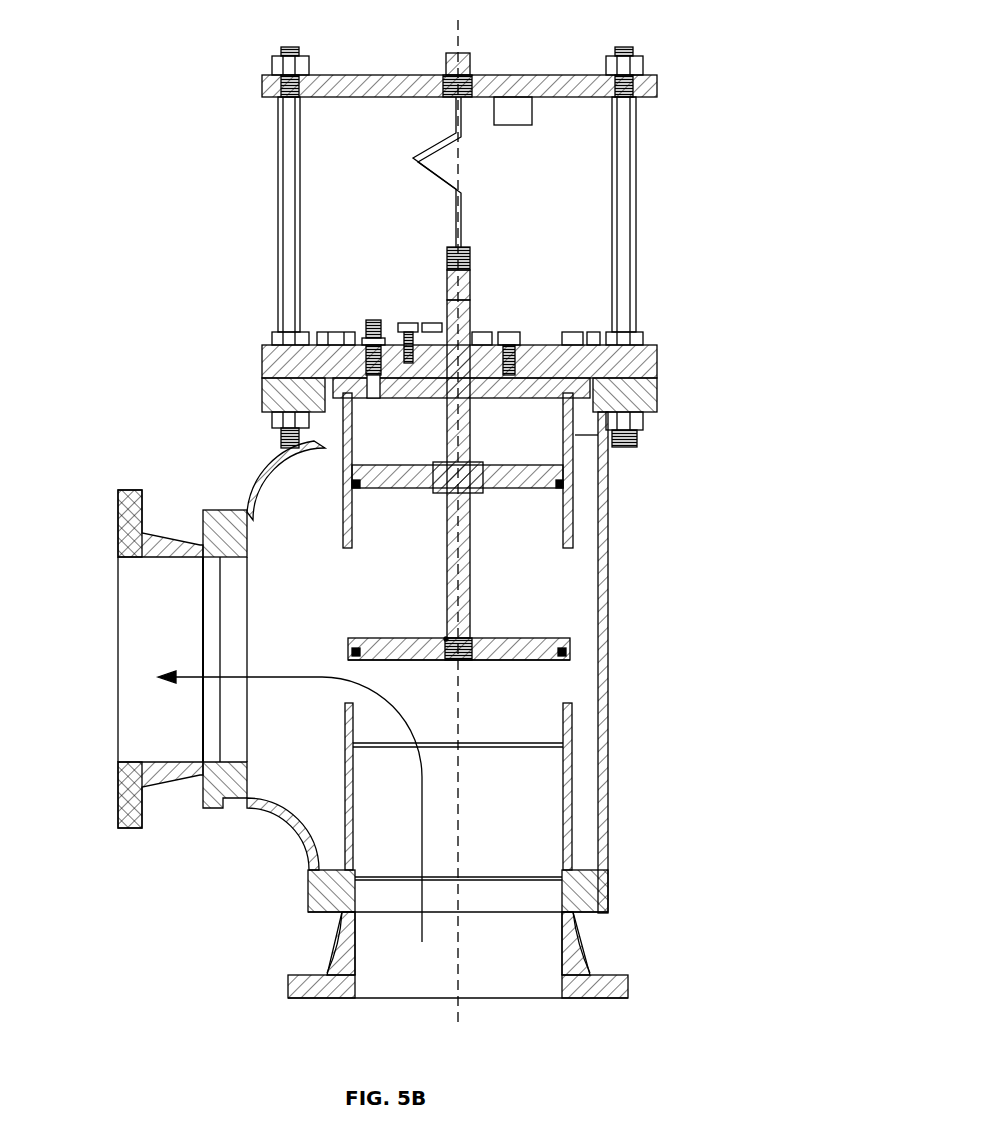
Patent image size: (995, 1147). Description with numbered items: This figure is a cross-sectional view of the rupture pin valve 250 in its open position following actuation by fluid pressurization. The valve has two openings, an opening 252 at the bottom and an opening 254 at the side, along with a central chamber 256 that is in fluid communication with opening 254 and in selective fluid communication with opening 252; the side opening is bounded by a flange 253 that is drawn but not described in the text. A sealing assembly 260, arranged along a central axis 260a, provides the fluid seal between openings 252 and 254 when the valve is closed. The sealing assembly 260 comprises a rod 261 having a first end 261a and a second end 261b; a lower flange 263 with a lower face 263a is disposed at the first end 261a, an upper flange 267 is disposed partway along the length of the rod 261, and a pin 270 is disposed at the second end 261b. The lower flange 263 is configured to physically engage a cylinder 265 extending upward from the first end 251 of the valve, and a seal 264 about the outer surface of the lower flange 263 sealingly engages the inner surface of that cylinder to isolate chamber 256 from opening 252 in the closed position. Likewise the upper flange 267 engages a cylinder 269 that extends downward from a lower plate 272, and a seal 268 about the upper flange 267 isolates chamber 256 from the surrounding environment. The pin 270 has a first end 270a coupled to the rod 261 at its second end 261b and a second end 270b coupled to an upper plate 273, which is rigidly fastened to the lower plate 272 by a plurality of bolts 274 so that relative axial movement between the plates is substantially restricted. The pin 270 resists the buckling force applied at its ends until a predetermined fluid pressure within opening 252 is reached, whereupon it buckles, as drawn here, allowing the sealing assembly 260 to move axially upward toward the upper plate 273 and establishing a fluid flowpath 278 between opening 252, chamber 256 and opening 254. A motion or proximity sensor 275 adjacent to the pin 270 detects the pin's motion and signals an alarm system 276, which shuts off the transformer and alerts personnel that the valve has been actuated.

The rupture pin valve 250 is at (126, 36).
The first end 251 is at (597, 993).
The opening 252 is at (415, 990).
The inlet flange 253 is at (123, 528).
The opening 254 is at (128, 728).
The central chamber 256 is at (303, 830).
The sealing assembly 260 is at (461, 508).
The central axis 260a is at (460, 1008).
The rod 261 is at (460, 413).
The first end 261a is at (445, 638).
The second end 261b is at (470, 253).
The lower flange 263 is at (492, 650).
The lower face 263a is at (528, 660).
The seal 264 is at (352, 653).
The cylinder 265 is at (568, 768).
The upper flange 267 is at (535, 480).
The seal 268 is at (352, 482).
The cylinder 269 is at (570, 443).
The pin 270 is at (455, 127).
The first end 270a is at (448, 257).
The second end 270b is at (443, 77).
The lower plate 272 is at (317, 363).
The upper plate 273 is at (598, 90).
The bolts 274 is at (288, 187).
The motion or proximity sensor 275 is at (515, 102).
The alarm system 276 is at (537, 54).
The fluid flowpath 278 is at (420, 927).